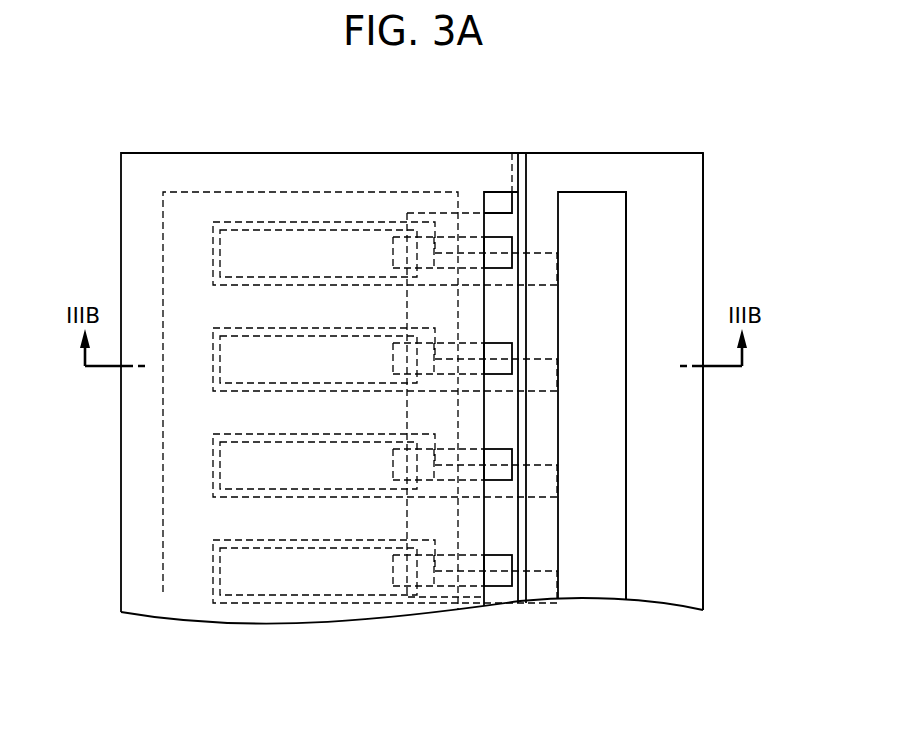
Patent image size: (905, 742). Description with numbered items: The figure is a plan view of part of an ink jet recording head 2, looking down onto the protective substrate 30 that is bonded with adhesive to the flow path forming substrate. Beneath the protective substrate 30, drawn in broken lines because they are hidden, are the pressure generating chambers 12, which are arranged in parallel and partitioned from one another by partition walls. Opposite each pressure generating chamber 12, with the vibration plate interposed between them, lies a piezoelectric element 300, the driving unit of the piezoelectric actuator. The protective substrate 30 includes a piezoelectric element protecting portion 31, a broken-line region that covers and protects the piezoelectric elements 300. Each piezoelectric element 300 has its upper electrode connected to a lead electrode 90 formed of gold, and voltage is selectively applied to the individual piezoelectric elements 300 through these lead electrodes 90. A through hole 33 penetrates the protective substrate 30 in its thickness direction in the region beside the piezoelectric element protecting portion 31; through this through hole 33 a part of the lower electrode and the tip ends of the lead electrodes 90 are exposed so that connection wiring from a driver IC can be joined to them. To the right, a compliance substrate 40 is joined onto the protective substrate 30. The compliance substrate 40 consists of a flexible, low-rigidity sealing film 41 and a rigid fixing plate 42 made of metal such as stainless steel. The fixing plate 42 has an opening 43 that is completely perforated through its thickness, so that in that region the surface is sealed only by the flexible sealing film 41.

The ink jet recording head 2 is at (661, 79).
The protective substrate 30 is at (275, 167).
The piezoelectric element protecting portion 31 is at (165, 592).
The pressure generating chamber 12 is at (240, 600).
The piezoelectric element 300 is at (324, 594).
The through hole 33 is at (518, 227).
The lead electrode 90 is at (505, 578).
The compliance substrate 40 is at (759, 202).
The sealing film 41 is at (603, 264).
The fixing plate 42 is at (682, 226).
The opening 43 is at (625, 212).